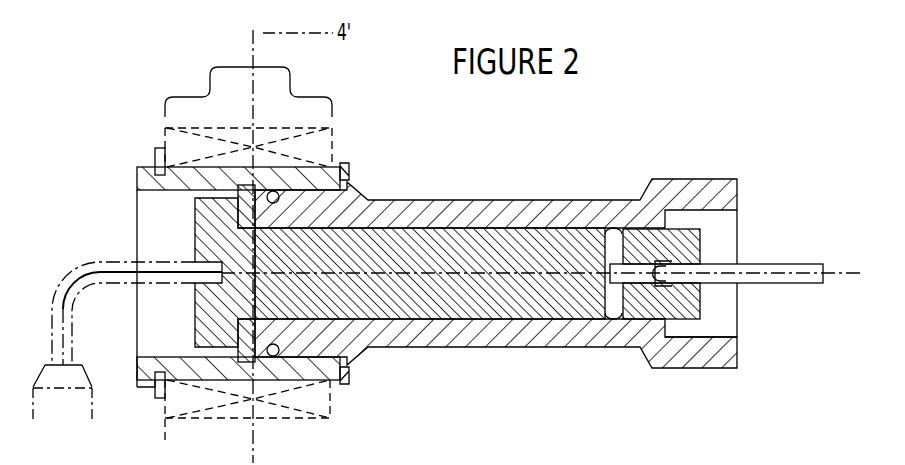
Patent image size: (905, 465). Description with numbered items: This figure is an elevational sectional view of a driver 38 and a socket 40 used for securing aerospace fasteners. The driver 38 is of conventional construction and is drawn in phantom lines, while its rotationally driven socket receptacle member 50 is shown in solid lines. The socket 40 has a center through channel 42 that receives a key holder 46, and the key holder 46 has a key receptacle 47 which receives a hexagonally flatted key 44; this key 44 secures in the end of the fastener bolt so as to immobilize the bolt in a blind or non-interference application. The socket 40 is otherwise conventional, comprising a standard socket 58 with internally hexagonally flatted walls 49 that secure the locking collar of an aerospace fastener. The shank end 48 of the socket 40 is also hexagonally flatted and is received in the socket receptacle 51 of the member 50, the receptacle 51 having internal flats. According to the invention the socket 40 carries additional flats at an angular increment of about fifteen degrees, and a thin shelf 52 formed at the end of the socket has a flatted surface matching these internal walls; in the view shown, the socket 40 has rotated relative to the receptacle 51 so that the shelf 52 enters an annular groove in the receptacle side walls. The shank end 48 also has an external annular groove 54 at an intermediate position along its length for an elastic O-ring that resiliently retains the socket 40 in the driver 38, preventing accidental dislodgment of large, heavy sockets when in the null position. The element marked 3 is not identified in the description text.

The driver 38 is at (225, 92).
The socket receptacle member 50 is at (341, 160).
The external annular groove 54 is at (349, 375).
The socket 40 is at (532, 205).
The center through channel 42 is at (480, 322).
The key holder 46 is at (580, 328).
The key receptacle 47 is at (660, 268).
The shank end 48 is at (355, 340).
The internally hexagonally flatted walls 49 is at (727, 310).
The socket receptacle 51 is at (137, 197).
The thin shelf 52 is at (235, 354).
The cable connector 3 is at (161, 402).
The hexagonally flatted key 44 is at (760, 283).
The standard socket 58 is at (690, 330).